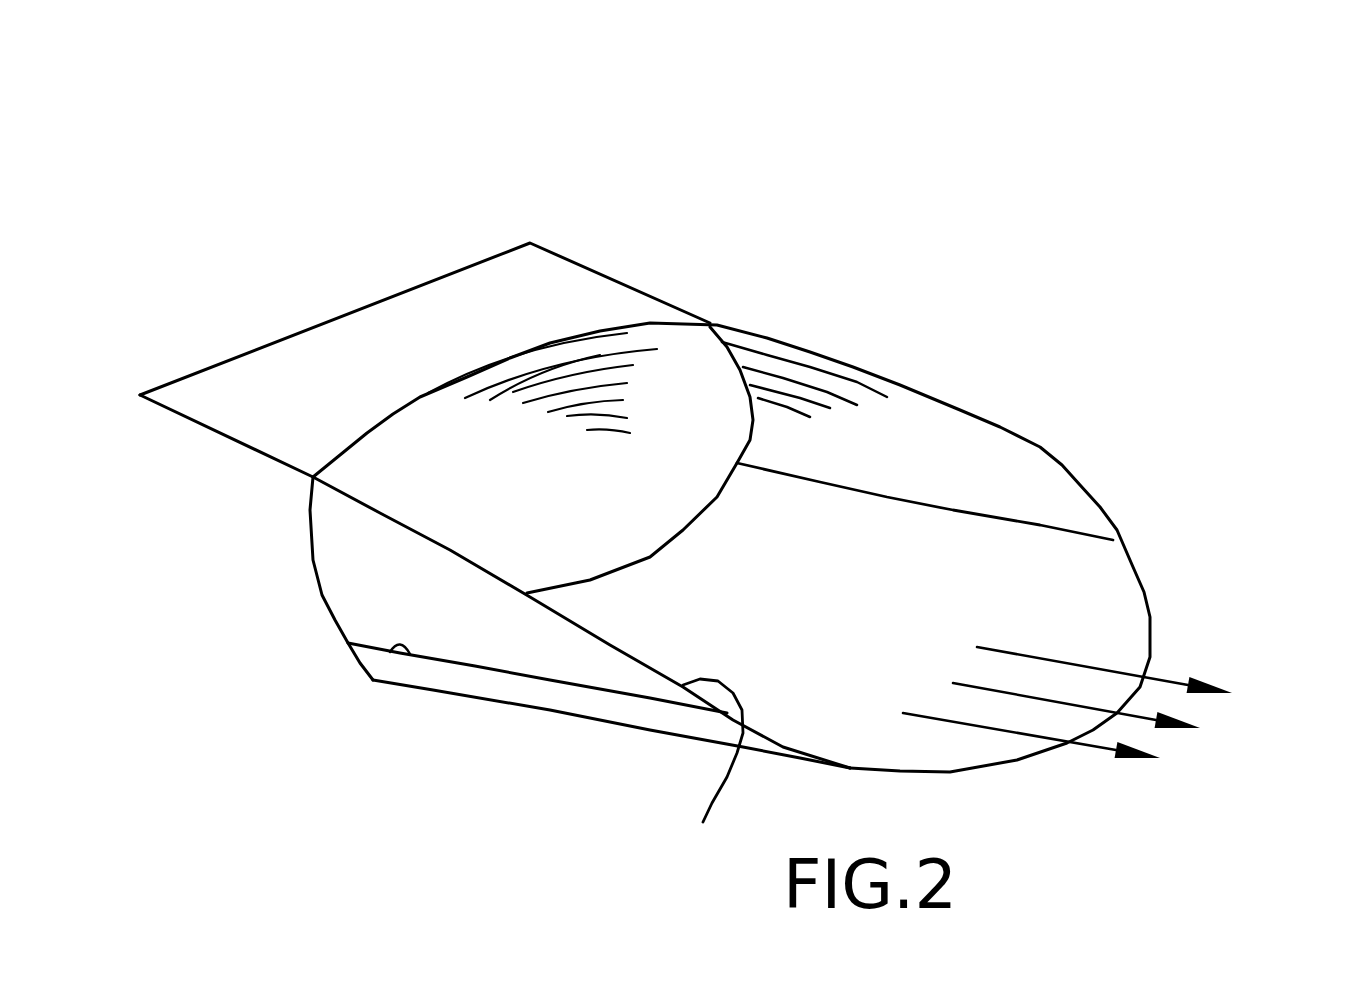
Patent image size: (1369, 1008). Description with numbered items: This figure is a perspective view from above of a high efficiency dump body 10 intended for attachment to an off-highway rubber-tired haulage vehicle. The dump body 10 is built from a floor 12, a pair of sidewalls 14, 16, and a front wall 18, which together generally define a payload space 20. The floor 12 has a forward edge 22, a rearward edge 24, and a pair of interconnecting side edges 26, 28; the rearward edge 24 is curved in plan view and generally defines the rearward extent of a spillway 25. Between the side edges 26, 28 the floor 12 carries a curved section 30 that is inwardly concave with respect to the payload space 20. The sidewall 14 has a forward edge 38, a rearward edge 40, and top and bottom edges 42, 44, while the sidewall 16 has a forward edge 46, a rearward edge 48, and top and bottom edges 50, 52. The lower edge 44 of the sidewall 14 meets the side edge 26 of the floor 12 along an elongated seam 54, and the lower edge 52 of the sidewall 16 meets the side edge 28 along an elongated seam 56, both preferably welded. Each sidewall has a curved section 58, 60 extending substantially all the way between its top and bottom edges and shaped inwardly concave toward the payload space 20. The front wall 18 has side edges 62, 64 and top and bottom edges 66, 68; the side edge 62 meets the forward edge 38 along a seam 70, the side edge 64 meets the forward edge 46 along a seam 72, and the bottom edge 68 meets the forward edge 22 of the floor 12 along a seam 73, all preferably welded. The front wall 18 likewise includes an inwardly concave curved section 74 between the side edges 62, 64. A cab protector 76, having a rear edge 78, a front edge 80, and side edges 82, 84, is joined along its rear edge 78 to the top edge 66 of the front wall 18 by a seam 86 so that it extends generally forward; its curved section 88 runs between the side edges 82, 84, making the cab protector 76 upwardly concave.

The dump body 10 is at (1006, 186).
The floor 12 is at (1020, 613).
The sidewall 14 is at (493, 637).
The sidewall 16 is at (977, 460).
The front wall 18 is at (643, 397).
The payload space 20 is at (810, 547).
The forward edge 22 is at (620, 565).
The rearward edge 24 is at (1150, 660).
The spillway 25 is at (1070, 707).
The side edge 26 is at (593, 695).
The side edge 28 is at (1067, 527).
The curved section 30 is at (1067, 568).
The forward edge 38 is at (313, 578).
The rearward edge 40 is at (711, 765).
The top edge 42 is at (330, 610).
The bottom edge 44 is at (393, 655).
The forward edge 46 is at (770, 378).
The rearward edge 48 is at (1117, 527).
The top edge 50 is at (857, 365).
The bottom edge 52 is at (917, 500).
The elongated seam 54 is at (505, 675).
The elongated seam 56 is at (1000, 517).
The curved section 58 is at (410, 602).
The curved section 60 is at (873, 422).
The side edge 62 is at (313, 550).
The side edge 64 is at (733, 325).
The top edge 66 is at (403, 405).
The bottom edge 68 is at (585, 578).
The seam 70 is at (310, 517).
The seam 72 is at (745, 362).
The seam 73 is at (660, 550).
The curved section 74 is at (397, 490).
The cab protector 76 is at (335, 462).
The rear edge 78 is at (313, 477).
The front edge 80 is at (213, 387).
The side edge 82 is at (182, 420).
The side edge 84 is at (613, 280).
The seam 86 is at (427, 390).
The curved section 88 is at (350, 377).